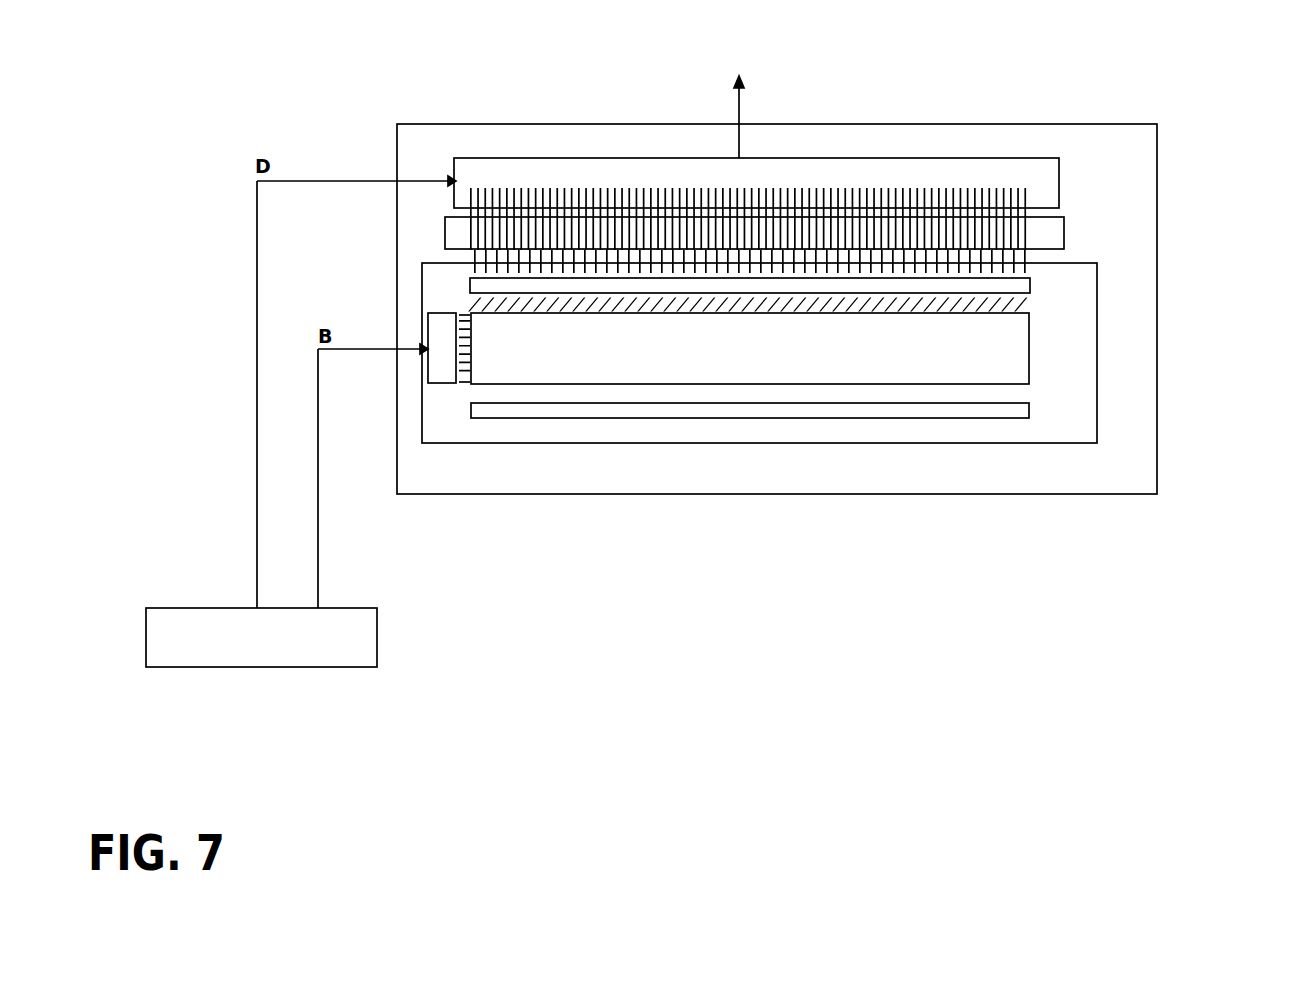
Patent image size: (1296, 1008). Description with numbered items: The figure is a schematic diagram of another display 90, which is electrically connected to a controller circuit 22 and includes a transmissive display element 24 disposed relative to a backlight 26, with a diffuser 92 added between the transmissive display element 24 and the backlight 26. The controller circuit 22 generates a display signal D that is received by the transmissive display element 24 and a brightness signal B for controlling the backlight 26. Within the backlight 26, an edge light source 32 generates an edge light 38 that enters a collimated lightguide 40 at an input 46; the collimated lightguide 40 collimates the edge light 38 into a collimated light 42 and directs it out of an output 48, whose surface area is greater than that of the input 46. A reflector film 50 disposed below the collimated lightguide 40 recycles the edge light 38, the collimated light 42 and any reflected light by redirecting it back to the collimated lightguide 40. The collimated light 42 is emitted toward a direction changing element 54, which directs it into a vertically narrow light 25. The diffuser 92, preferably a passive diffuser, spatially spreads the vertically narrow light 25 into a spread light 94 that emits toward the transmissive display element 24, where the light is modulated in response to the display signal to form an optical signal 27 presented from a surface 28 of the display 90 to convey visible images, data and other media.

The controller circuit 22 is at (378, 636).
The transmissive display element 24 is at (1060, 186).
The vertically narrow light 25 is at (1024, 258).
The backlight 26 is at (1098, 377).
The optical signal 27 is at (741, 106).
The surface 28 is at (578, 124).
The edge light source 32 is at (437, 312).
The edge light 38 is at (461, 385).
The collimated lightguide 40 is at (1030, 355).
The collimated light 42 is at (1022, 305).
The input 46 is at (471, 350).
The output 48 is at (507, 313).
The reflector film 50 is at (1030, 412).
The direction changing element 54 is at (1031, 286).
The display 90 is at (945, 125).
The diffuser 92 is at (1065, 233).
The spread light 94 is at (1066, 212).